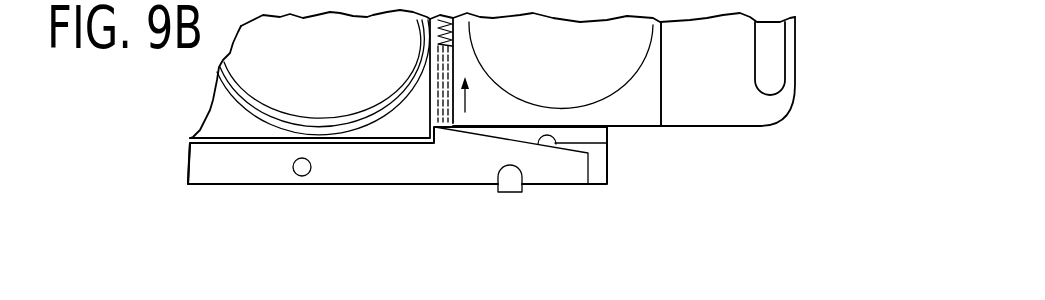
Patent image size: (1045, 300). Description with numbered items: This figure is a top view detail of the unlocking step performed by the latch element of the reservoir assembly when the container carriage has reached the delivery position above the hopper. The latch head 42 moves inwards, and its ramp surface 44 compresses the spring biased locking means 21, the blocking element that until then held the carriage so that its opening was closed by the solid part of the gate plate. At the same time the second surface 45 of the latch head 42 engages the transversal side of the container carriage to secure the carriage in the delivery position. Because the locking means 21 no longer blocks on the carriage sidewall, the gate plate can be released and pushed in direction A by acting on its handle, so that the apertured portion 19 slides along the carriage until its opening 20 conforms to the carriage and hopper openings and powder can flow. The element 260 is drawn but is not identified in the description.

The apertured portion 19 is at (630, 112).
The opening 20 is at (627, 80).
The locking means 21 is at (481, 92).
The latch head 42 is at (468, 168).
The ramp surface 44 is at (558, 146).
The second surface 45 is at (436, 140).
The pivot pin 260 is at (303, 176).
The direction A is at (818, 23).